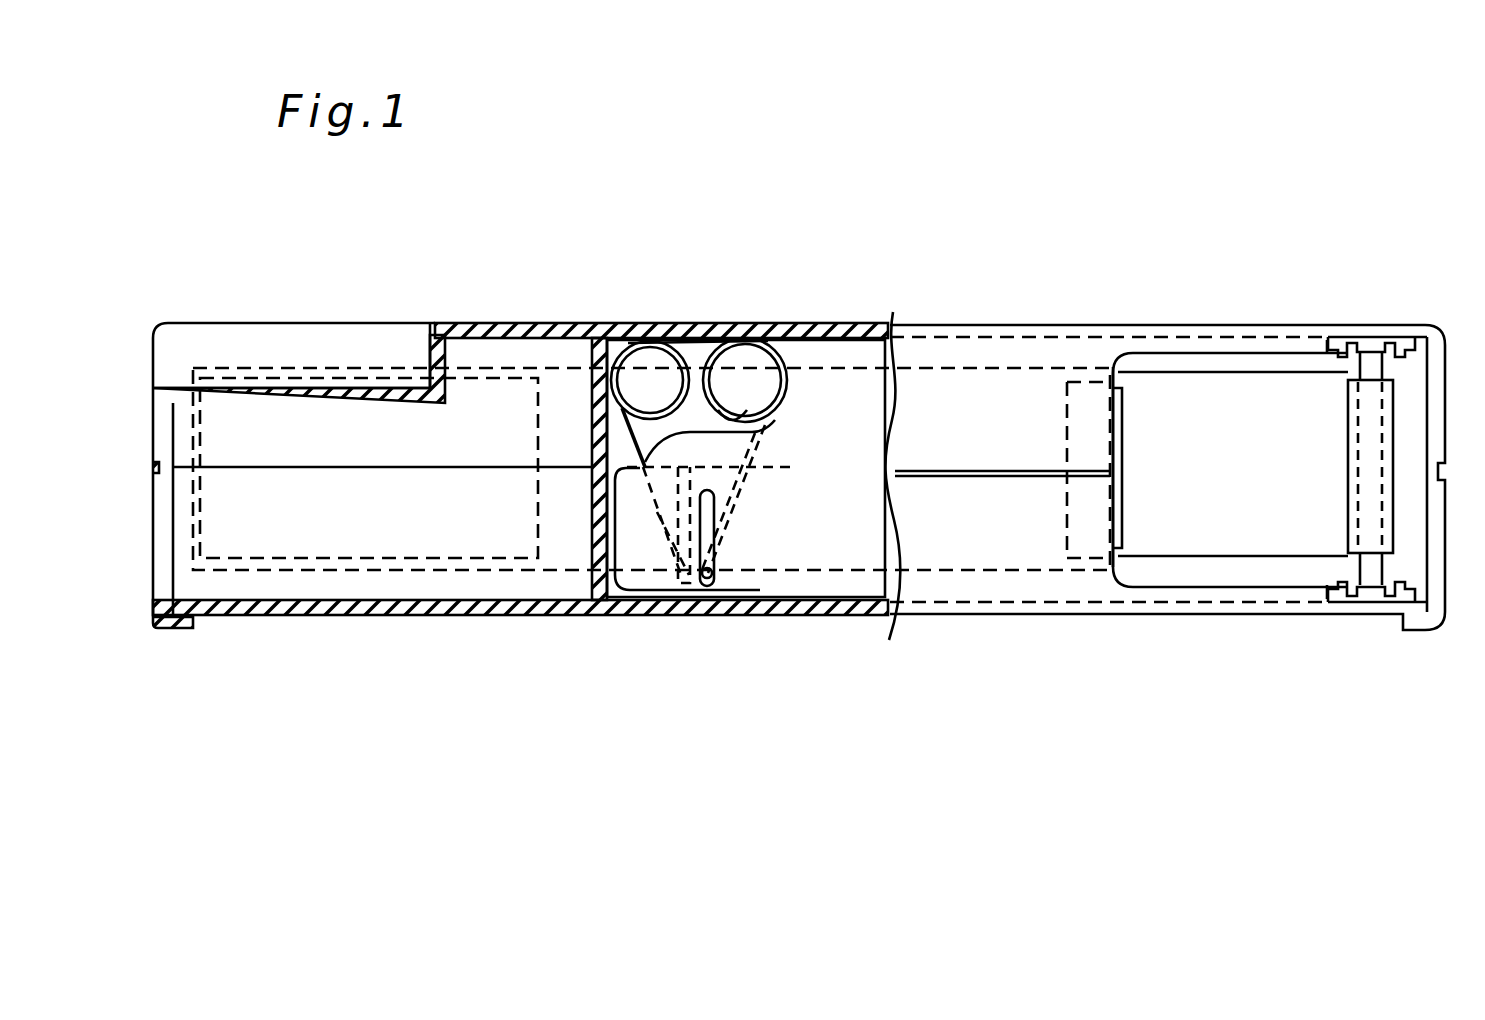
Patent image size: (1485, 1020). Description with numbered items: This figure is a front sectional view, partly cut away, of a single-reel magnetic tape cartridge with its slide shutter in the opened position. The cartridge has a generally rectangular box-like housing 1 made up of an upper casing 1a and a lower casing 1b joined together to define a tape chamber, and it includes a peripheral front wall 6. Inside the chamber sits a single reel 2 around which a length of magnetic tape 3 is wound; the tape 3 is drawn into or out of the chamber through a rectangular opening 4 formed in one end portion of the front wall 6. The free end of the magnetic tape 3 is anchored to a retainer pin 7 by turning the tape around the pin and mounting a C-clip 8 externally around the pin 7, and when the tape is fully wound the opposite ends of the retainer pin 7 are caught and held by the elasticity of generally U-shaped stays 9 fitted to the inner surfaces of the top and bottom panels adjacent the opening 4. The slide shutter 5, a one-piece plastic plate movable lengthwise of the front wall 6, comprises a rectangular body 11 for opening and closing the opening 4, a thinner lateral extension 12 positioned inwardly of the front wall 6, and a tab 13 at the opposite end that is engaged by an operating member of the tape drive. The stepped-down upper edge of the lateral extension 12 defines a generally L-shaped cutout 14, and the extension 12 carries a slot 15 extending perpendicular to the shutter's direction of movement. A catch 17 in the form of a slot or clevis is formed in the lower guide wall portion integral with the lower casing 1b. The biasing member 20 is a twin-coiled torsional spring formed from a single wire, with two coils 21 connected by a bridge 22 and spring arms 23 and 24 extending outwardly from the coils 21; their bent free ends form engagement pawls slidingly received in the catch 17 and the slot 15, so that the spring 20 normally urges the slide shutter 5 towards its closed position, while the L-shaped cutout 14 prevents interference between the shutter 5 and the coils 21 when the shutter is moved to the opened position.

The housing 1 is at (524, 622).
The upper casing 1a is at (468, 323).
The lower casing 1b is at (420, 616).
The reel 2 is at (336, 368).
The magnetic tape 3 is at (200, 512).
The rectangular opening 4 is at (1232, 362).
The slide shutter 5 is at (858, 366).
The front wall 6 is at (976, 350).
The retainer pin 7 is at (1336, 408).
The C-clip 8 is at (1350, 472).
The stays 9 is at (1395, 340).
The rectangular body 11 is at (880, 518).
The lateral extension 12 is at (640, 592).
The tab 13 is at (1123, 470).
The L-shaped cutout 14 is at (765, 422).
The slot 15 is at (708, 528).
The catch 17 is at (656, 525).
The biasing member 20 is at (791, 398).
The coils 21 is at (621, 324).
The bridge 22 is at (690, 325).
The spring arm 23 is at (612, 450).
The spring arm 24 is at (740, 493).